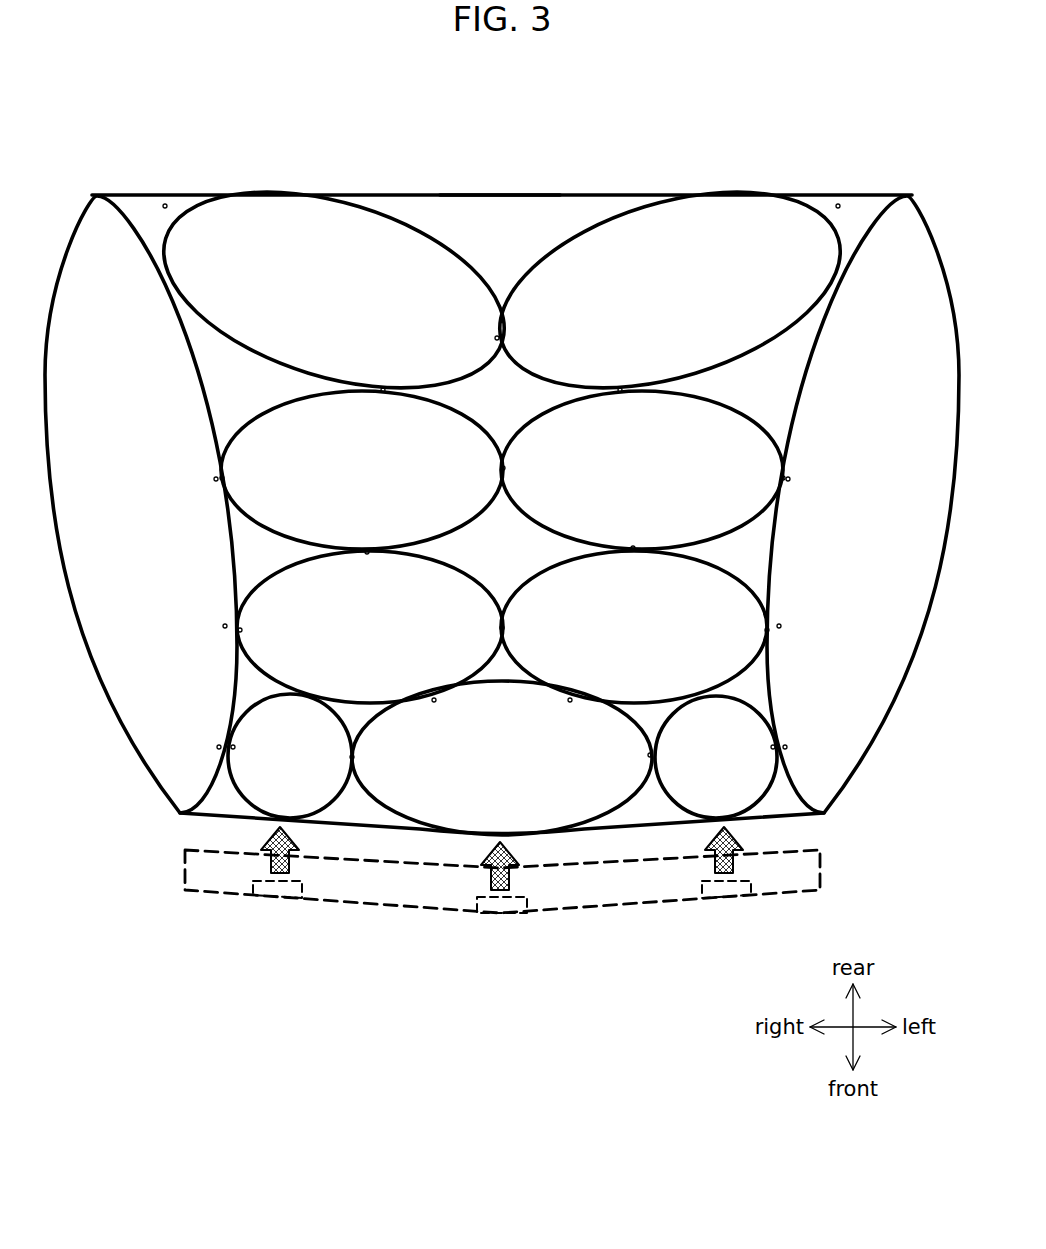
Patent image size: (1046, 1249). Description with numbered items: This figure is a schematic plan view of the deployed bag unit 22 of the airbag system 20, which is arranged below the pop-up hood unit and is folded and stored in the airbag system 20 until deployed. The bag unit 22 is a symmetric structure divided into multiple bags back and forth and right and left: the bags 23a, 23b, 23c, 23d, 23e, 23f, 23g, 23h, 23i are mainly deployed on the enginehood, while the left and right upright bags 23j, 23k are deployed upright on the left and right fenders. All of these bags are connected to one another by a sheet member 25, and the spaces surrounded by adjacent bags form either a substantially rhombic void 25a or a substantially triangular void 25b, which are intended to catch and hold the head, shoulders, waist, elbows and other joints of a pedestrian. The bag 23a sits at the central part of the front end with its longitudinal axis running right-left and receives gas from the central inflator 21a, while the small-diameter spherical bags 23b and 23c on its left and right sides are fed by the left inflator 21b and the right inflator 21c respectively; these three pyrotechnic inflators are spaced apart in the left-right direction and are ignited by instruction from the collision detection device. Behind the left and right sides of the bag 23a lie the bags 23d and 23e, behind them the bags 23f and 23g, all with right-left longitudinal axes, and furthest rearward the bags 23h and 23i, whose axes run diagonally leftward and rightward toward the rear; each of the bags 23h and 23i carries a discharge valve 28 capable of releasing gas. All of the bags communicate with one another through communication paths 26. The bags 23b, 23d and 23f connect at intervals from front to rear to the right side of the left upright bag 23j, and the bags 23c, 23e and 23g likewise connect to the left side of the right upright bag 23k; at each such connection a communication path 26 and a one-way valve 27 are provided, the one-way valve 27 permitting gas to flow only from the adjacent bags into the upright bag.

The airbag system 20 is at (822, 862).
The central inflator 21a is at (490, 913).
The left inflator 21b is at (720, 897).
The right inflator 21c is at (268, 897).
The bag unit 22 is at (79, 690).
The bag 23a is at (479, 777).
The bag 23b is at (691, 782).
The bag 23c is at (274, 782).
The bag 23d is at (617, 631).
The bag 23e is at (339, 631).
The bag 23f is at (615, 476).
The bag 23g is at (341, 476).
The bag 23h is at (634, 311).
The bag 23i is at (311, 311).
The left upright bag 23j is at (840, 579).
The right upright bag 23k is at (128, 579).
The sheet member 25 is at (496, 236).
The void 25a is at (479, 414).
The void 25b is at (219, 399).
The communication path 26 is at (497, 338).
The one-way valve 27 is at (208, 478).
The discharge valve 28 is at (170, 218).